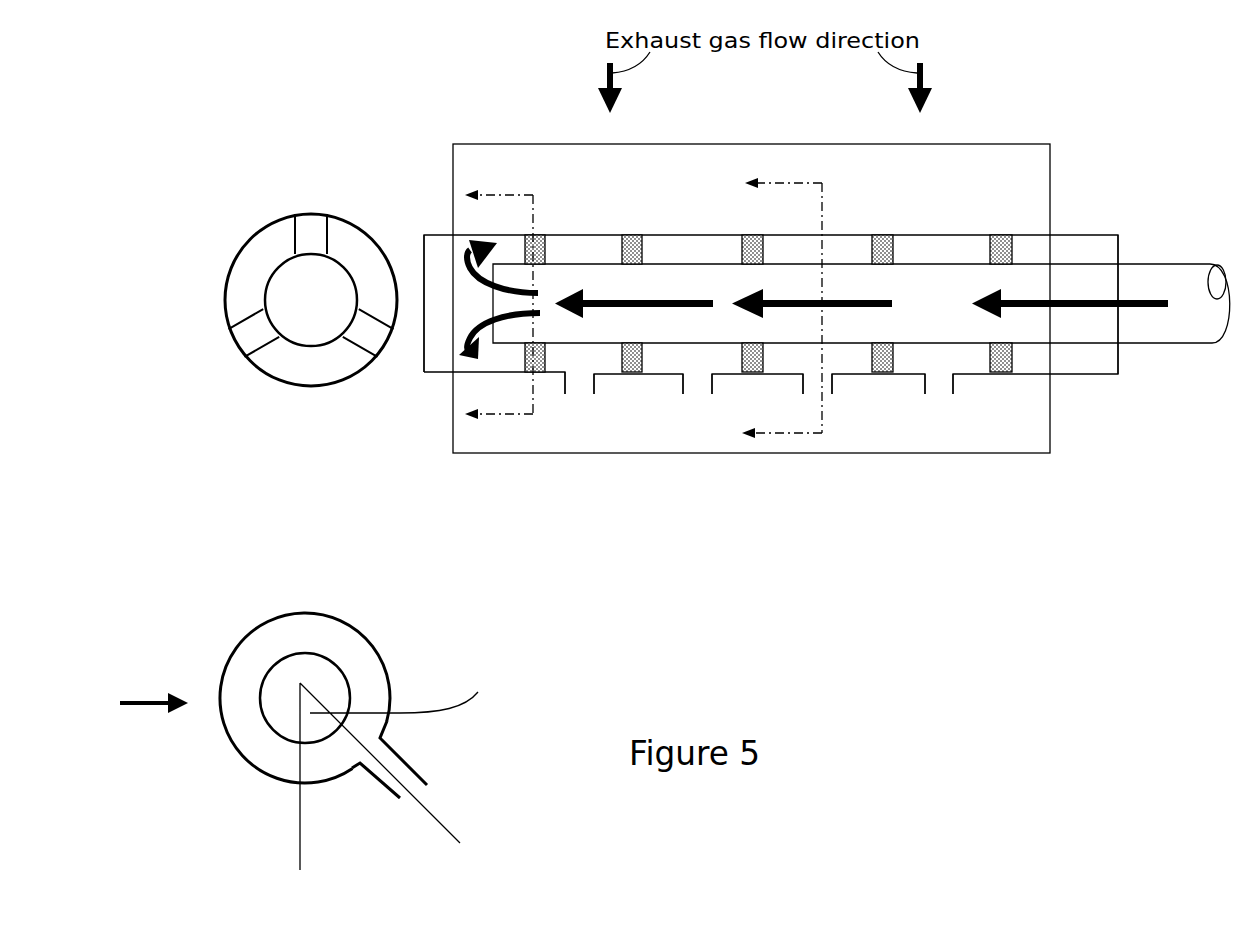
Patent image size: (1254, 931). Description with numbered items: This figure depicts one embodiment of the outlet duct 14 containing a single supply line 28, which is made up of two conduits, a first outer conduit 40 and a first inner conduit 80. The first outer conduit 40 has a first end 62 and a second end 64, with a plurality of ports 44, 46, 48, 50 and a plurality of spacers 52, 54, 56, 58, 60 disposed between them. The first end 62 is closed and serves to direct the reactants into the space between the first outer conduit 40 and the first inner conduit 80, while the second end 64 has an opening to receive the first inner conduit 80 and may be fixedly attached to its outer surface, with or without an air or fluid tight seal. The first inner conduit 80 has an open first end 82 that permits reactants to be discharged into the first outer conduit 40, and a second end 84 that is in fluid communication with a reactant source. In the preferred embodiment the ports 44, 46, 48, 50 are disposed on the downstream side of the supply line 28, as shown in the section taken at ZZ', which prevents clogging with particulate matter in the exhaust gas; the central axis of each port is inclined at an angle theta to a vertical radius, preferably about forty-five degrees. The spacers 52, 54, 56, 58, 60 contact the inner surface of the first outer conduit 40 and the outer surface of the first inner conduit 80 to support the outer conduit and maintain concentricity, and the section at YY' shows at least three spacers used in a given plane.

The outlet duct 14 is at (455, 435).
The supply line 28 is at (1086, 196).
The first outer conduit 40 is at (1065, 374).
The port 44 is at (584, 386).
The port 46 is at (702, 383).
The port 48 is at (832, 387).
The port 50 is at (932, 383).
The spacer 52 is at (538, 253).
The spacer 54 is at (650, 248).
The spacer 56 is at (760, 248).
The spacer 58 is at (890, 247).
The spacer 60 is at (1012, 234).
The first end 62 is at (418, 366).
The second end 64 is at (1120, 360).
The first inner conduit 80 is at (1140, 263).
The first end 82 is at (487, 333).
The second end 84 is at (1220, 277).